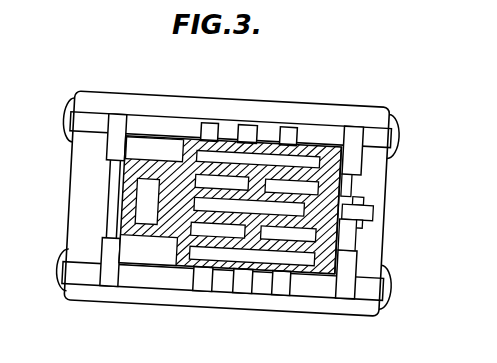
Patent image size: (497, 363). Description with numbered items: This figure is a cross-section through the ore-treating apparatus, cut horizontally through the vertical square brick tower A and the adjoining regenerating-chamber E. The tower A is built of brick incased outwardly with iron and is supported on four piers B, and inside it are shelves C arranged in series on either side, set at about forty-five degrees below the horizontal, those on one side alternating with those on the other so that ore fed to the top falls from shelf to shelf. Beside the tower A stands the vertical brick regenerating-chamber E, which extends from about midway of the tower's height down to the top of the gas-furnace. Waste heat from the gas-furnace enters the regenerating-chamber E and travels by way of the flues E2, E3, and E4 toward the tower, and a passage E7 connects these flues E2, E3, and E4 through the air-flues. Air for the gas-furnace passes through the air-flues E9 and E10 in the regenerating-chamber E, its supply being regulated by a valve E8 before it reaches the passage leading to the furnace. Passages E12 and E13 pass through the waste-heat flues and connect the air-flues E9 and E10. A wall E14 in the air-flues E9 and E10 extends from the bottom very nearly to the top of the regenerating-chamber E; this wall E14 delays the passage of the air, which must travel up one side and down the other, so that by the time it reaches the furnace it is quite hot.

The vertical square brick tower A is at (130, 207).
The piers B is at (393, 296).
The shelves C is at (160, 214).
The regenerating-chamber E is at (201, 247).
The flue E2 is at (279, 251).
The flue E3 is at (365, 226).
The flue E4 is at (265, 155).
The passage E7 is at (340, 177).
The valve E8 is at (374, 214).
The air-flue E9 is at (353, 243).
The air-flue E10 is at (355, 182).
The passage E12 is at (205, 205).
The passage E13 is at (363, 198).
The wall E14 is at (272, 193).